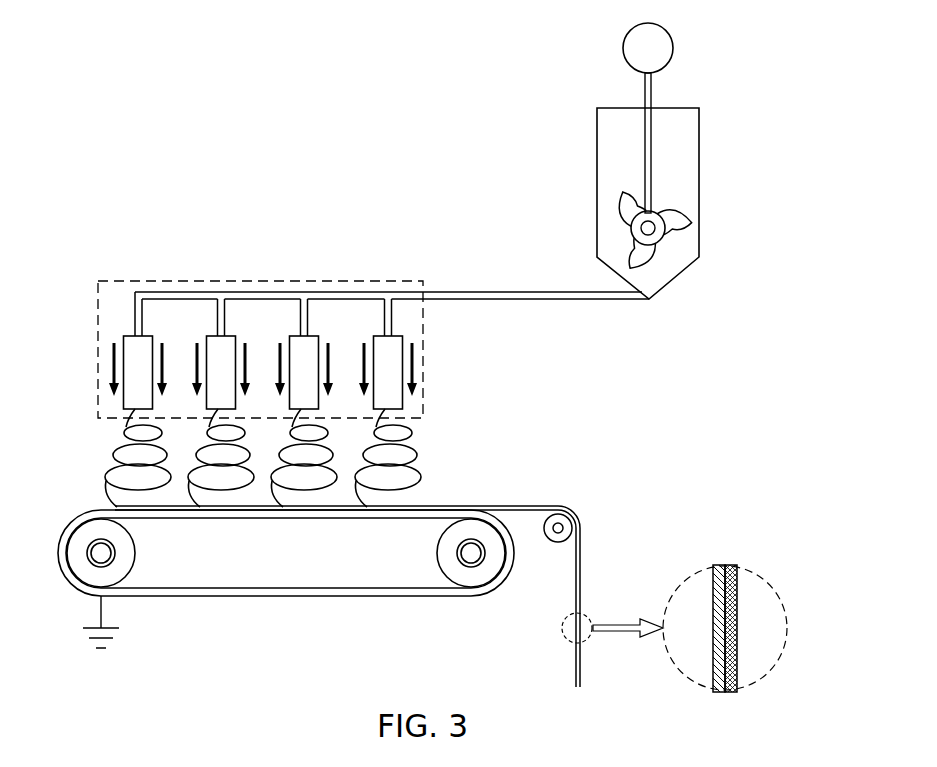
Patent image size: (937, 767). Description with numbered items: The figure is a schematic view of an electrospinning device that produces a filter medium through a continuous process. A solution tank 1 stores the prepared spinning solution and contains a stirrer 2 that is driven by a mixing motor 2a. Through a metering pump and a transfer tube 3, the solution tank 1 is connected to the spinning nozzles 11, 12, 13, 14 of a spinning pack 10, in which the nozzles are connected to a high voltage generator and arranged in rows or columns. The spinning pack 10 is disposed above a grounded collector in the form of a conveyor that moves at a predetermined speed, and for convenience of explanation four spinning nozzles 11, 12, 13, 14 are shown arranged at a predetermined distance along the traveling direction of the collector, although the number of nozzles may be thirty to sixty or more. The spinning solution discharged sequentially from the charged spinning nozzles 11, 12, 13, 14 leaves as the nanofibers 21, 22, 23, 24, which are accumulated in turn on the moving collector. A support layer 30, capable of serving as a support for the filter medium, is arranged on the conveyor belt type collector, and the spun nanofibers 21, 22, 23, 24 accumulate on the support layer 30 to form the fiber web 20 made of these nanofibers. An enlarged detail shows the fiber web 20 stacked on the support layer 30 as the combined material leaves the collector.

The solution tank 1 is at (699, 150).
The stirrer 2 is at (690, 220).
The mixing motor 2a is at (673, 48).
The transfer tube 3 is at (480, 292).
The spinning pack 10 is at (97, 343).
The spinning nozzle 11 is at (135, 330).
The spinning nozzle 12 is at (218, 330).
The spinning nozzle 13 is at (302, 330).
The spinning nozzle 14 is at (386, 330).
The fiber web 20 is at (527, 508).
The nanofiber 21 is at (104, 483).
The nanofiber 22 is at (200, 443).
The nanofiber 23 is at (326, 432).
The nanofiber 24 is at (421, 478).
The support layer 30 is at (183, 512).